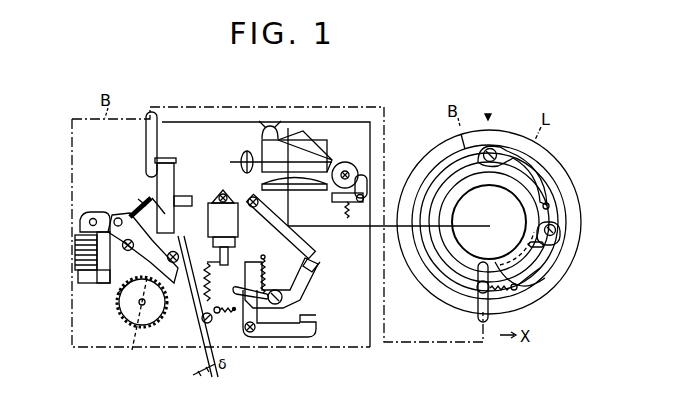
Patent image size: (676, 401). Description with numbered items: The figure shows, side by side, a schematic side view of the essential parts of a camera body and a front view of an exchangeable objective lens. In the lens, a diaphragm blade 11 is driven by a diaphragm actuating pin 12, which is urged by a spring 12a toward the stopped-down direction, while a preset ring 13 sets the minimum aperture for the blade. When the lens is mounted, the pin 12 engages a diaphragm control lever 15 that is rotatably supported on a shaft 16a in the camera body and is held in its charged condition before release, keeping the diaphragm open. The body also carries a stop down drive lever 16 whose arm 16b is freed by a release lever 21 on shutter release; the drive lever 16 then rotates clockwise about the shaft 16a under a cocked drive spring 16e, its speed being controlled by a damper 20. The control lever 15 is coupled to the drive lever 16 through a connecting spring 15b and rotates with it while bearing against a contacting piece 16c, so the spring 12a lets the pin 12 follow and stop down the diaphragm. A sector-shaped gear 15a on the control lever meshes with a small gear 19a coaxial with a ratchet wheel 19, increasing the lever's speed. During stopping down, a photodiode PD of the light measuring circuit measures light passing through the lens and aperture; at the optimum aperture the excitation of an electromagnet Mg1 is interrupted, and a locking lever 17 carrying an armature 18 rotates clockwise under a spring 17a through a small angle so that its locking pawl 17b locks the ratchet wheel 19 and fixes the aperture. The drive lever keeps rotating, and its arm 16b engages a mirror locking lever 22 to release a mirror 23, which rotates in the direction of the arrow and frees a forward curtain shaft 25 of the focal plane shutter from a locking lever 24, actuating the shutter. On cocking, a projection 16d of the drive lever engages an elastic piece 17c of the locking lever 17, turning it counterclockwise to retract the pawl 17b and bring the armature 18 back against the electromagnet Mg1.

The diaphragm blade 11 is at (537, 255).
The diaphragm actuating pin 12 is at (157, 143).
The spring 12a is at (537, 290).
The preset ring 13 is at (580, 188).
The diaphragm control lever 15 is at (178, 190).
The sector-shaped gear 15a is at (185, 306).
The connecting spring 15b is at (148, 200).
The stop down drive lever 16 is at (223, 191).
The shaft 16a is at (241, 162).
The arm 16b is at (283, 205).
The contacting piece 16c is at (207, 187).
The projection 16d is at (157, 200).
The drive spring 16e is at (228, 306).
The locking lever 17 is at (143, 248).
The spring 17a is at (118, 293).
The locking pawl 17b is at (219, 305).
The elastic piece 17c is at (138, 199).
The armature 18 is at (83, 213).
The ratchet wheel 19 is at (117, 312).
The small gear 19a is at (131, 326).
The damper 20 is at (258, 262).
The release lever 21 is at (318, 325).
The mirror locking lever 22 is at (302, 274).
The mirror 23 is at (313, 258).
The locking lever 24 is at (368, 178).
The forward curtain shaft 25 is at (345, 162).
The electromagnet Mg1 is at (83, 277).
The photodiode PD is at (271, 124).